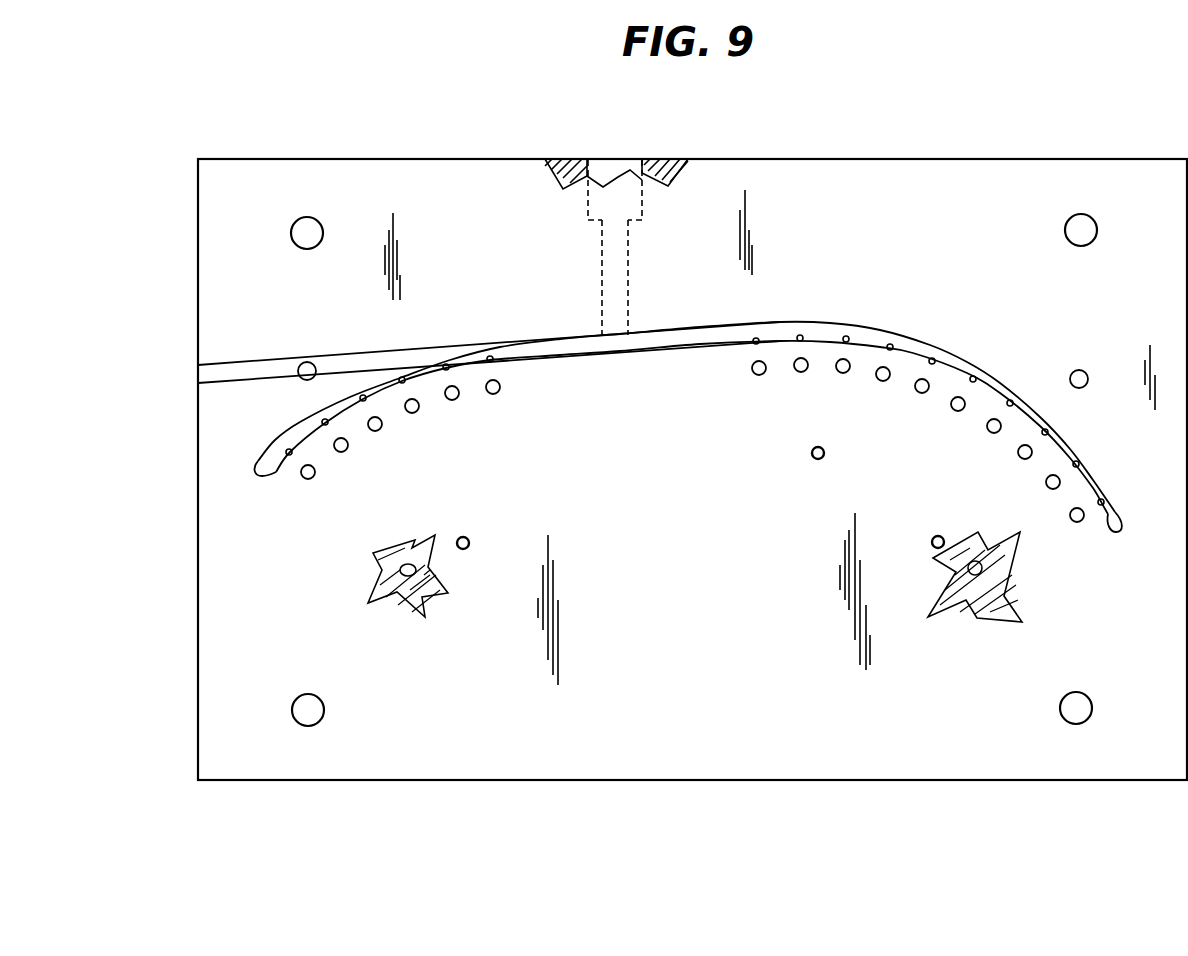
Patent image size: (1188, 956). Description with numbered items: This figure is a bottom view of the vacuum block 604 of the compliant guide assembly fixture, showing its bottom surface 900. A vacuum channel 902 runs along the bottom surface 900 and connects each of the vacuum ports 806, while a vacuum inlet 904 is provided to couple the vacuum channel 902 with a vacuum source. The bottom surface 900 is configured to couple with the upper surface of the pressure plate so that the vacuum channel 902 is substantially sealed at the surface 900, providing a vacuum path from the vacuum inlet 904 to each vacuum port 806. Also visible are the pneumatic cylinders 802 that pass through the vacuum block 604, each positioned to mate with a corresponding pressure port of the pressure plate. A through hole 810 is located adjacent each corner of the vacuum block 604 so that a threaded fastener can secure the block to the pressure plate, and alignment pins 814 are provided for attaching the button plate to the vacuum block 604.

The bottom surface 900 is at (928, 196).
The vacuum channel 902 is at (868, 325).
The vacuum inlet 904 is at (600, 148).
The vacuum port 806 is at (798, 334).
The pneumatic cylinder 802 is at (797, 372).
The alignment pin 814 is at (300, 364).
The vacuum block 604 is at (198, 340).
The through hole 810 is at (306, 696).